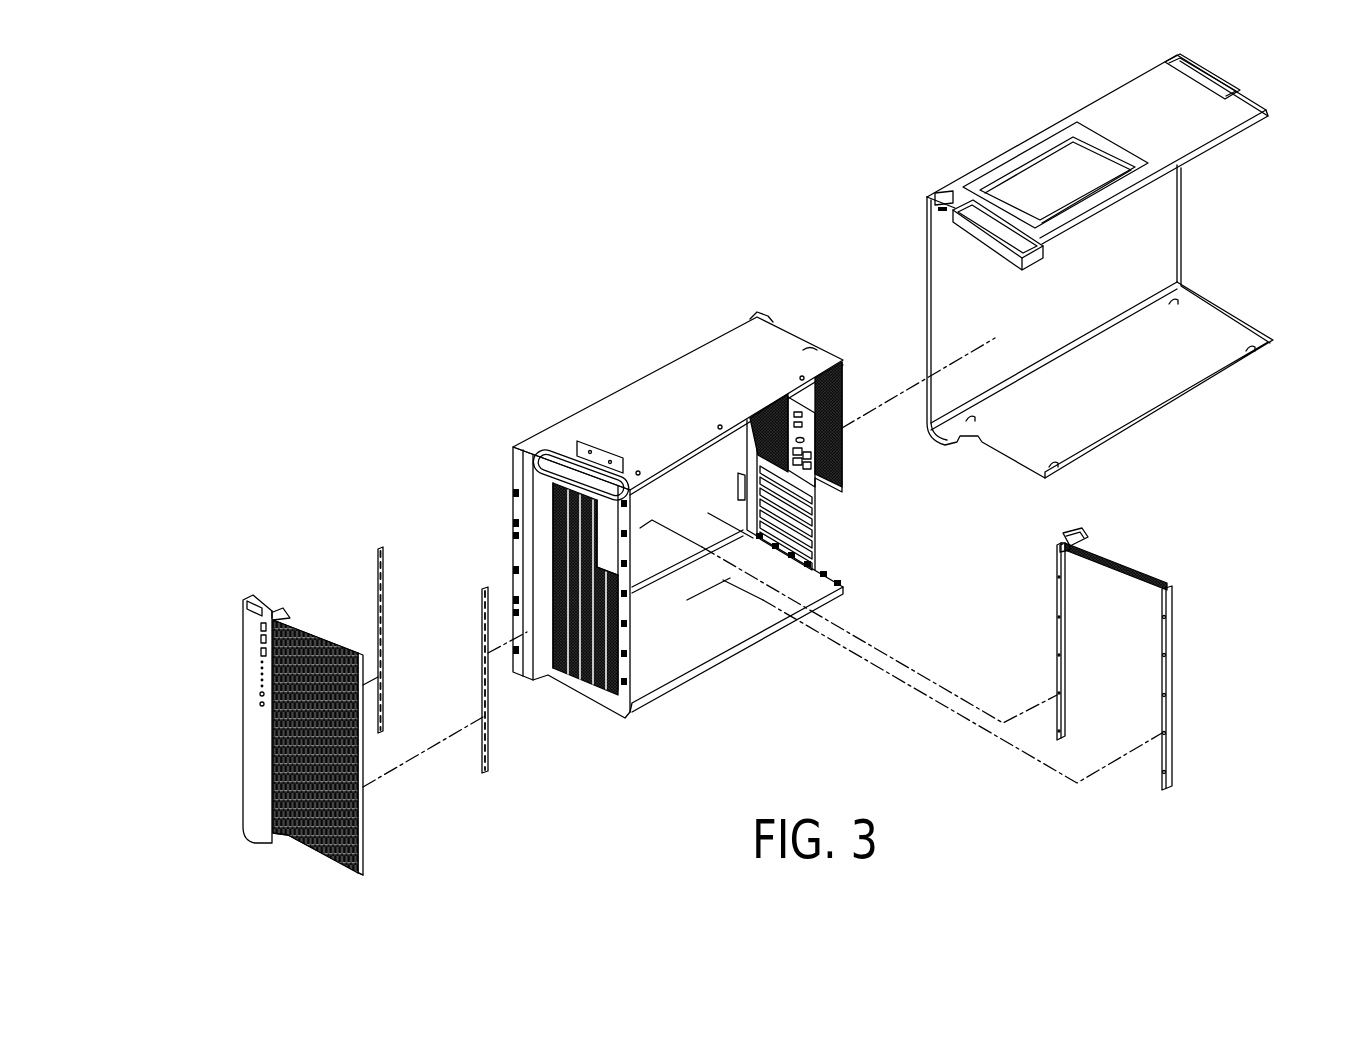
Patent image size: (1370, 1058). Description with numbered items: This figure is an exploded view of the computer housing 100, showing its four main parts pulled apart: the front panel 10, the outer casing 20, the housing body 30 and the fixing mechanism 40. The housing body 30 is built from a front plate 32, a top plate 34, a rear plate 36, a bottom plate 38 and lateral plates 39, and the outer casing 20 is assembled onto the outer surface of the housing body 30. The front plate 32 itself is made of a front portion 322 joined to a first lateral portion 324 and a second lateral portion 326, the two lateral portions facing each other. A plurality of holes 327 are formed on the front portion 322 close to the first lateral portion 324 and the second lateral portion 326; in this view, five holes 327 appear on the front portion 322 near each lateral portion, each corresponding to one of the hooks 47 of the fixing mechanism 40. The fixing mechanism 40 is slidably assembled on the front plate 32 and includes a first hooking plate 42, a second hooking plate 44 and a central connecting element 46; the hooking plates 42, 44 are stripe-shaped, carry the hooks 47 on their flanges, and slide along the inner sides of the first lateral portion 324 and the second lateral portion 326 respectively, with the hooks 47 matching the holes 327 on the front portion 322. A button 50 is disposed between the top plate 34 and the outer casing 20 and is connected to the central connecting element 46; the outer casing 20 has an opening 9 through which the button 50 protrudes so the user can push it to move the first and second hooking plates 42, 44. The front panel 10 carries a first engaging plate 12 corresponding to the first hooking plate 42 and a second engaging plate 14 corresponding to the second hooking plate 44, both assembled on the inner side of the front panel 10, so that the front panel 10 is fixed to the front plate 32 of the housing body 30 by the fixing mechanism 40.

The computer housing 100 is at (432, 210).
The opening 9 is at (945, 198).
The front panel 10 is at (255, 728).
The first engaging plate 12 is at (483, 747).
The second engaging plate 14 is at (383, 688).
The outer casing 20 is at (1092, 266).
The housing body 30 is at (671, 535).
The front plate 32 is at (573, 616).
The front portion 322 is at (550, 630).
The first lateral portion 324 is at (638, 675).
The second lateral portion 326 is at (511, 665).
The holes 327 is at (512, 650).
The top plate 34 is at (722, 362).
The rear plate 36 is at (810, 482).
The bottom plate 38 is at (723, 623).
The lateral plates 39 is at (815, 567).
The fixing mechanism 40 is at (1120, 637).
The first hooking plate 42 is at (1209, 696).
The second hooking plate 44 is at (1058, 593).
The central connecting element 46 is at (1135, 567).
The hooks 47 is at (1167, 780).
The button 50 is at (1062, 538).